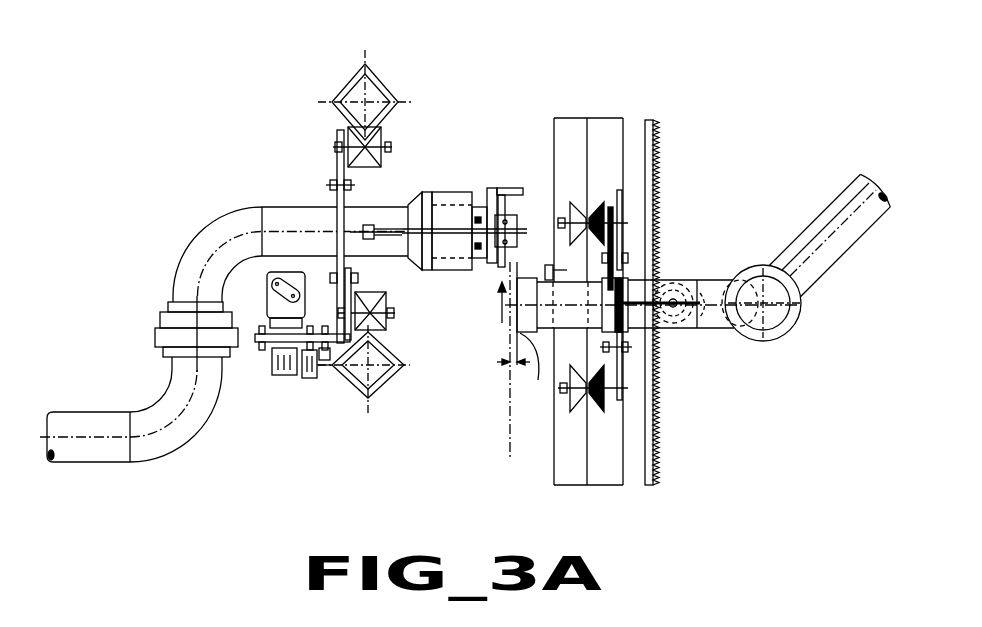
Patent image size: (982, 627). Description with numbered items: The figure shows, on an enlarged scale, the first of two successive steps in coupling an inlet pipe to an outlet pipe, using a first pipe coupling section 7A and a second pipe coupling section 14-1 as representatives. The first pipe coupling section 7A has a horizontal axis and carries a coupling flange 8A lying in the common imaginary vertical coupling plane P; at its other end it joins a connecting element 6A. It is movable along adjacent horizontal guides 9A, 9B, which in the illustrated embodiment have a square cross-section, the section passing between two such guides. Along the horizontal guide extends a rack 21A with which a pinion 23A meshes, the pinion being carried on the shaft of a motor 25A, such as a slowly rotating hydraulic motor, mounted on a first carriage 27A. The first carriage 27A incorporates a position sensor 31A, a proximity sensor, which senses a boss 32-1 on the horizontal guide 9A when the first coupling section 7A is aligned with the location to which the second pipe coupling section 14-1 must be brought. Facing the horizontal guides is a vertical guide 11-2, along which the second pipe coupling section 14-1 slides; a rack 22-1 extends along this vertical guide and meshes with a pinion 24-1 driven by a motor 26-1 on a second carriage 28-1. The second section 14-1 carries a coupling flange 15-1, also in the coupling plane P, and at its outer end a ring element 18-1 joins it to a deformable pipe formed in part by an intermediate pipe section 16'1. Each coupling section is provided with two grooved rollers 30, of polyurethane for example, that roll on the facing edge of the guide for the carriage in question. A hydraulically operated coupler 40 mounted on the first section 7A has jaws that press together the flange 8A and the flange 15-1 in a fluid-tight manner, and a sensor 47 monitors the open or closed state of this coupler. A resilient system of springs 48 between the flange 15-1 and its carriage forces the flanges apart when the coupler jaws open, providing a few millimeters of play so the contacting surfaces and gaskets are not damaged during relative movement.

The flange coupling 6A is at (155, 333).
The first pipe coupling section 7A is at (369, 207).
The first carriage 27A is at (337, 166).
The horizontal guide 9B is at (350, 82).
The grooved roller 30 is at (381, 140).
The sensor 47 is at (362, 230).
The coupler 40 is at (453, 184).
The coupling flange 8A is at (503, 263).
The motor 25A is at (267, 288).
The position sensor 31A is at (350, 283).
The pinion 23A is at (267, 372).
The rack 21A is at (310, 380).
The boss 32-1 is at (330, 366).
The horizontal guide 9A is at (397, 377).
The coupling plane P is at (510, 440).
The coupling flange 15-1 is at (648, 335).
The vertical guide 11-2 is at (574, 486).
The rack 22-1 is at (660, 467).
The spring 48 is at (647, 268).
The second carriage 28-1 is at (622, 237).
The second pipe coupling section 14-1 is at (710, 277).
The pinion 24-1 is at (678, 330).
The motor 26-1 is at (707, 342).
The swivel ring 18-1 is at (797, 328).
The intermediate pipe section 16'1 is at (835, 246).